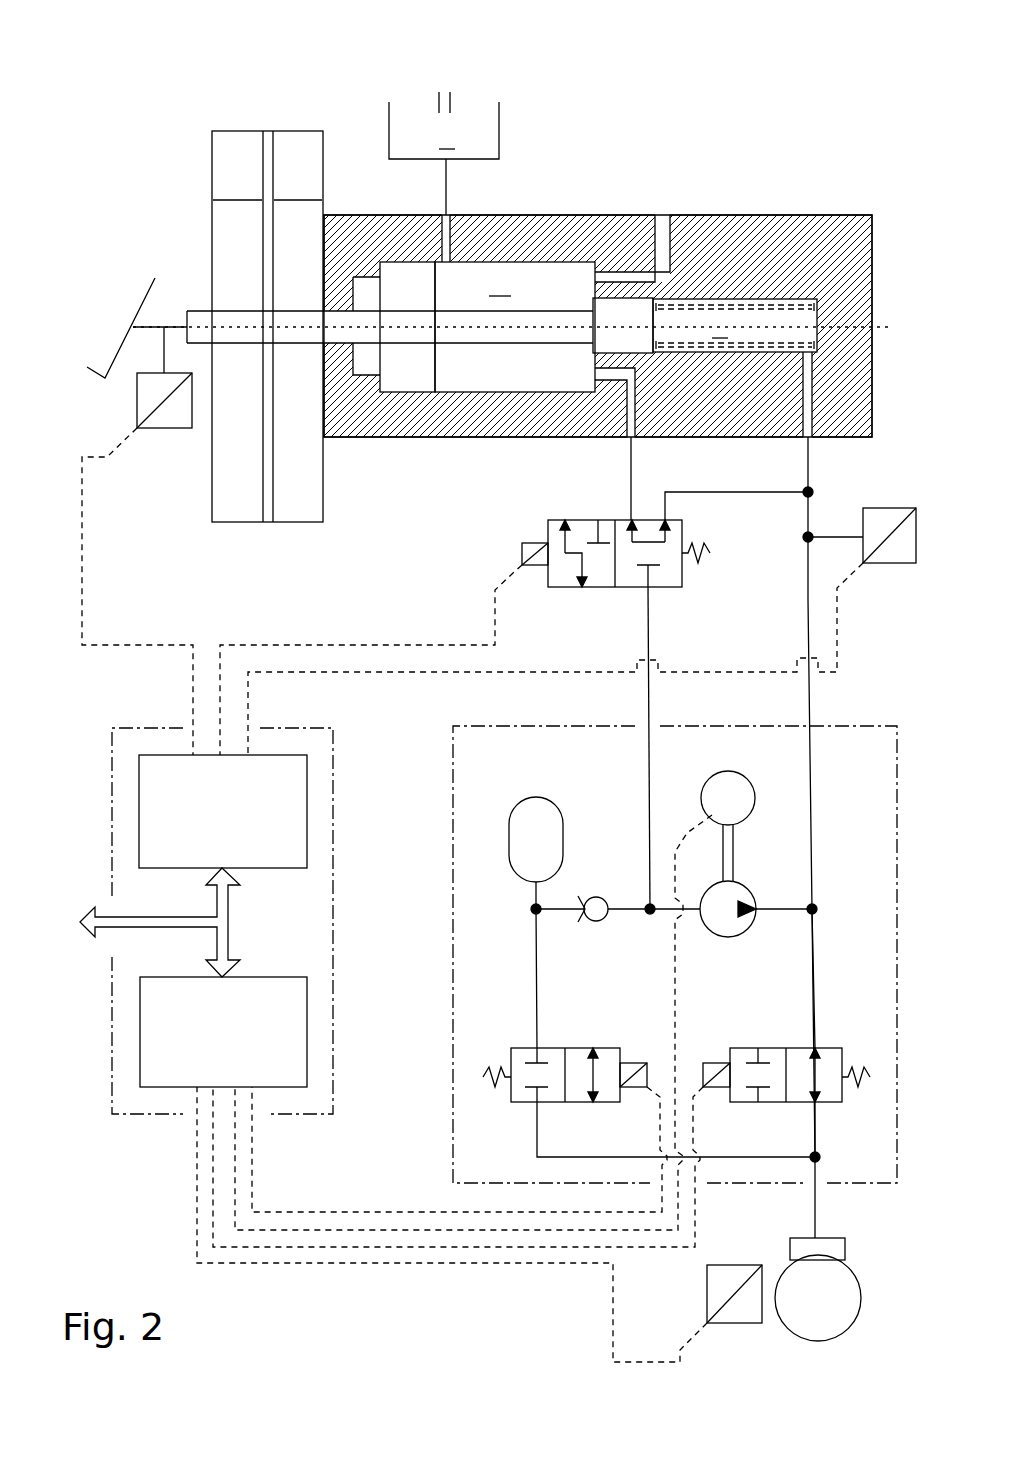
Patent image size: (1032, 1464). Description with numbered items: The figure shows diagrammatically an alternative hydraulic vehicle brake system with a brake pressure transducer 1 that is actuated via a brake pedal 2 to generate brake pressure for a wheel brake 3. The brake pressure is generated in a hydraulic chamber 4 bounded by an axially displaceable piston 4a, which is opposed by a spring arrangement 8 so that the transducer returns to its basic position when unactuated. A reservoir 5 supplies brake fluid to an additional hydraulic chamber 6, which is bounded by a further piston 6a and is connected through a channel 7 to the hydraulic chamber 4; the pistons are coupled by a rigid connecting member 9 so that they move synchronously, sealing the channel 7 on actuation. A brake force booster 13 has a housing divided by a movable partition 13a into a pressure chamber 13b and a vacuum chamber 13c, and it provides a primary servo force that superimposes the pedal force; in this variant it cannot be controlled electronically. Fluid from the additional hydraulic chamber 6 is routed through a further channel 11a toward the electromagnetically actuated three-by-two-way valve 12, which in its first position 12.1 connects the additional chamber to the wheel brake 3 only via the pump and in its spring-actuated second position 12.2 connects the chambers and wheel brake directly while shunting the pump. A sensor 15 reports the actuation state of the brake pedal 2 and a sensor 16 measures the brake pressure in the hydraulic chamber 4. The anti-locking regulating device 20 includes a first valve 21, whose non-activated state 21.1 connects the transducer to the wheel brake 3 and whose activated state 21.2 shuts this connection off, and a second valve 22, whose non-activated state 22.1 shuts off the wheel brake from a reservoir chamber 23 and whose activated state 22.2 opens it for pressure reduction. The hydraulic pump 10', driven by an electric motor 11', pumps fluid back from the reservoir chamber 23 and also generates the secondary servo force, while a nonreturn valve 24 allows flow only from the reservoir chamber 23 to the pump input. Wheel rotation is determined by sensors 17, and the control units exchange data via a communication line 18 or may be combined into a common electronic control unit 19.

The brake pressure transducer 1 is at (855, 167).
The brake pedal 2 is at (155, 278).
The wheel brake 3 is at (835, 1250).
The hydraulic chamber 4 is at (735, 325).
The piston 4a is at (617, 306).
The reservoir 5 is at (444, 153).
The additional hydraulic chamber 6 is at (515, 327).
The further piston 6a is at (411, 278).
The channel 7 is at (656, 270).
The spring arrangement 8 is at (752, 300).
The rigid connecting member 9 is at (525, 320).
The hydraulic pump 10' is at (756, 895).
The electric motor 11' is at (516, 988).
The further channel 11a is at (692, 490).
The 3/2-way valve 12 is at (548, 520).
The first position 12.1 is at (555, 583).
The second position 12.2 is at (683, 583).
The brake force booster 13 is at (212, 131).
The movable partition 13a is at (268, 137).
The pressure chamber 13b is at (237, 326).
The vacuum chamber 13c is at (298, 189).
The sensor 15 is at (180, 418).
The sensor 16 is at (905, 557).
The sensors 17 is at (733, 1272).
The communication line 18 is at (110, 923).
The common electronic control unit 19 is at (112, 1117).
The anti-locking regulating device 20 is at (892, 717).
The first valve 21 is at (842, 1045).
The non-activated state 21.1 is at (798, 1092).
The activated state 21.2 is at (775, 1057).
The second valve 22 is at (620, 1045).
The non-activated state 22.1 is at (555, 1093).
The activated state 22.2 is at (577, 1058).
The reservoir chamber 23 is at (545, 810).
The nonreturn valve 24 is at (595, 902).